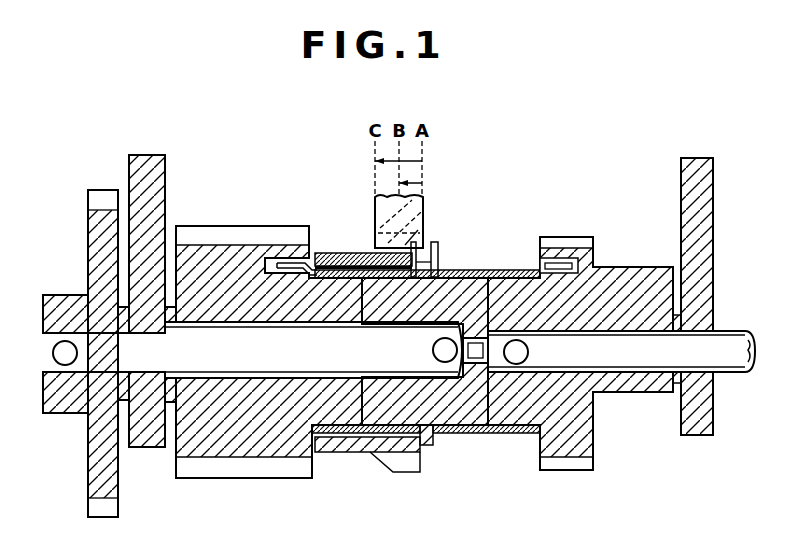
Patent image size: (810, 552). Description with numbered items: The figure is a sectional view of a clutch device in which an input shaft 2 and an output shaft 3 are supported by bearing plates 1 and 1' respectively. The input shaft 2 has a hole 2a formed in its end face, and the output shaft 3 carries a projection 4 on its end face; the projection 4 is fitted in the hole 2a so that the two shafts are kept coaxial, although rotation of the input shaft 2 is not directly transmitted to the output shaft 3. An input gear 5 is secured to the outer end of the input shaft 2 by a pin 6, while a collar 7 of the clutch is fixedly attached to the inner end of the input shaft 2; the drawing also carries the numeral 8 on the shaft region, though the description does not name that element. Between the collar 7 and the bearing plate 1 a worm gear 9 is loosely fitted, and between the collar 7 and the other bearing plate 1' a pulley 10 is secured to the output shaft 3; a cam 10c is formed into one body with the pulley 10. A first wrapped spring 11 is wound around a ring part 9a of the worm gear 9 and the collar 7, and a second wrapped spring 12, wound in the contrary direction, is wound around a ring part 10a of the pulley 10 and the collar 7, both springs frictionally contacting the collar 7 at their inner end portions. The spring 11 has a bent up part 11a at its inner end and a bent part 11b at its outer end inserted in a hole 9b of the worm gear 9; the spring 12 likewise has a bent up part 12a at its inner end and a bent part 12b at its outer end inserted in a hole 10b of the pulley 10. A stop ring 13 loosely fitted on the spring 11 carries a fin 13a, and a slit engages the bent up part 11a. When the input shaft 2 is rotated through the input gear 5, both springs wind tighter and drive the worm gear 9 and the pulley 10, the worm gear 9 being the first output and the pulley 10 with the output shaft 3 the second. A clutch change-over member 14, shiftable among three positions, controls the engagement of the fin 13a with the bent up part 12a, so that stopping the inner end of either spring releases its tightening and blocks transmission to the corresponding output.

The bearing plate 1 is at (151, 269).
The bearing plate 1' is at (714, 287).
The input shaft 2 is at (90, 365).
The hole 2a is at (472, 400).
The output shaft 3 is at (725, 345).
The projection 4 is at (478, 365).
The input gear 5 is at (90, 232).
The pin 6 is at (65, 341).
The collar 7 is at (455, 415).
The input shaft 8 is at (437, 358).
The worm gear 9 is at (250, 445).
The ring part 9a is at (330, 448).
The hole 9b is at (272, 258).
The pulley 10 is at (612, 300).
The ring part 10a is at (512, 433).
The hole 10b is at (582, 262).
The cam 10c is at (640, 393).
The first wrapped spring 11 is at (345, 266).
The bent up part 11a is at (415, 240).
The bent part 11b is at (292, 264).
The second wrapped spring 12 is at (488, 273).
The bent up part 12a is at (440, 245).
The bent part 12b is at (556, 266).
The stop ring 13 is at (352, 452).
The fin 13a is at (411, 473).
The clutch change-over member 14 is at (425, 215).